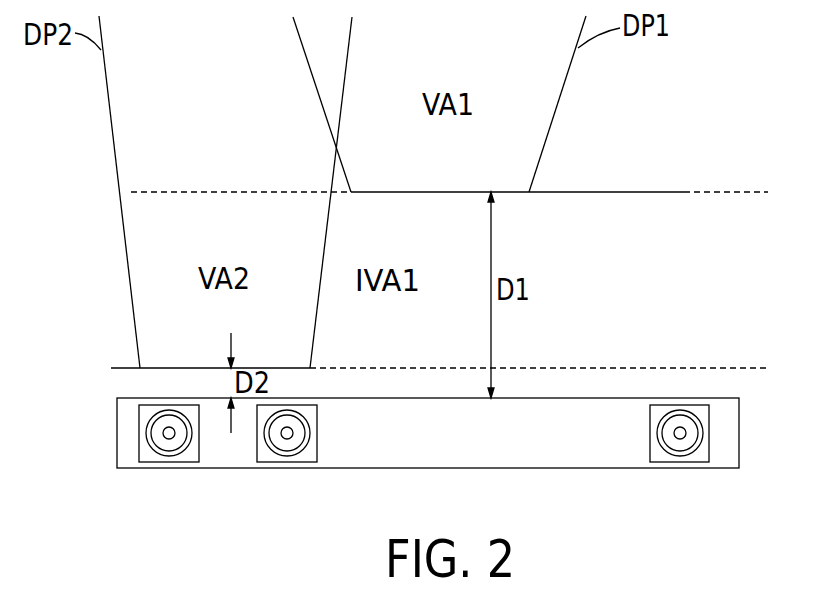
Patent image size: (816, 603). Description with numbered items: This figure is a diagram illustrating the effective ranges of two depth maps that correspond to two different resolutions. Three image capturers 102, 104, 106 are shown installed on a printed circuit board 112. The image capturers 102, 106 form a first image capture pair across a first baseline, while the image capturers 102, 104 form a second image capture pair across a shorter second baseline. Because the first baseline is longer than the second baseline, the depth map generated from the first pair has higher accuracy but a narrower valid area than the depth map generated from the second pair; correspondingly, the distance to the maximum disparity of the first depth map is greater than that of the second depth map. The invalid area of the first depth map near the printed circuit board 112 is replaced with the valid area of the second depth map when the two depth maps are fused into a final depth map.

The image capturer 102 is at (144, 462).
The image capturer 104 is at (302, 462).
The image capturer 106 is at (701, 462).
The printed circuit board 112 is at (739, 437).